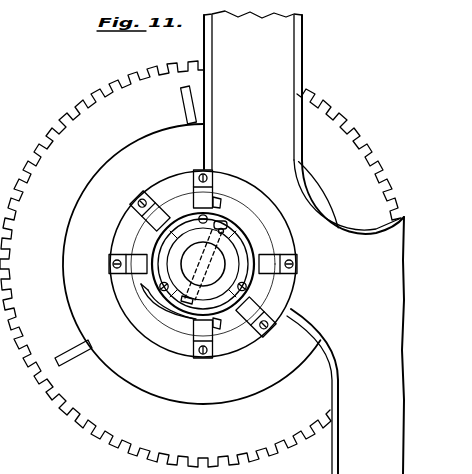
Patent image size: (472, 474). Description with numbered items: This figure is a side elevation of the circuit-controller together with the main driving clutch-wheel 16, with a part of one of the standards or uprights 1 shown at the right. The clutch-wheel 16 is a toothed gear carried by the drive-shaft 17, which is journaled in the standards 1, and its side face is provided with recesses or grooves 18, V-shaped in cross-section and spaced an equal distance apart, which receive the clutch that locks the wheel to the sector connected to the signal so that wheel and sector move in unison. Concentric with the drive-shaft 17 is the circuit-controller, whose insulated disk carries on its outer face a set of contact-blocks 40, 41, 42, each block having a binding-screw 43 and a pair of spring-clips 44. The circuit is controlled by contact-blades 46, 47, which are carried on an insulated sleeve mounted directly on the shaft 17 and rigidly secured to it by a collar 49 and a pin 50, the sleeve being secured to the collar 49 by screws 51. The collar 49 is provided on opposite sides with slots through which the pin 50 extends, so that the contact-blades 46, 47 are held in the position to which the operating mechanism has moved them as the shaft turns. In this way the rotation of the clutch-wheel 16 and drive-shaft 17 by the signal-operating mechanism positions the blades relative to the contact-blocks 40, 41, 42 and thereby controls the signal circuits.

The standards or uprights 1 is at (304, 242).
The main driving clutch-wheel 16 is at (200, 264).
The drive-shaft 17 is at (203, 264).
The recesses or grooves 18 is at (188, 125).
The contact-block 40 is at (142, 279).
The contact-block 41 is at (298, 265).
The contact-block 42 is at (266, 334).
The binding-screw 43 is at (214, 186).
The spring-clips 44 is at (133, 258).
The contact-blade 46 is at (152, 201).
The contact-blade 47 is at (168, 314).
The collar 49 is at (252, 282).
The pin 50 is at (222, 221).
The screws 51 is at (162, 290).